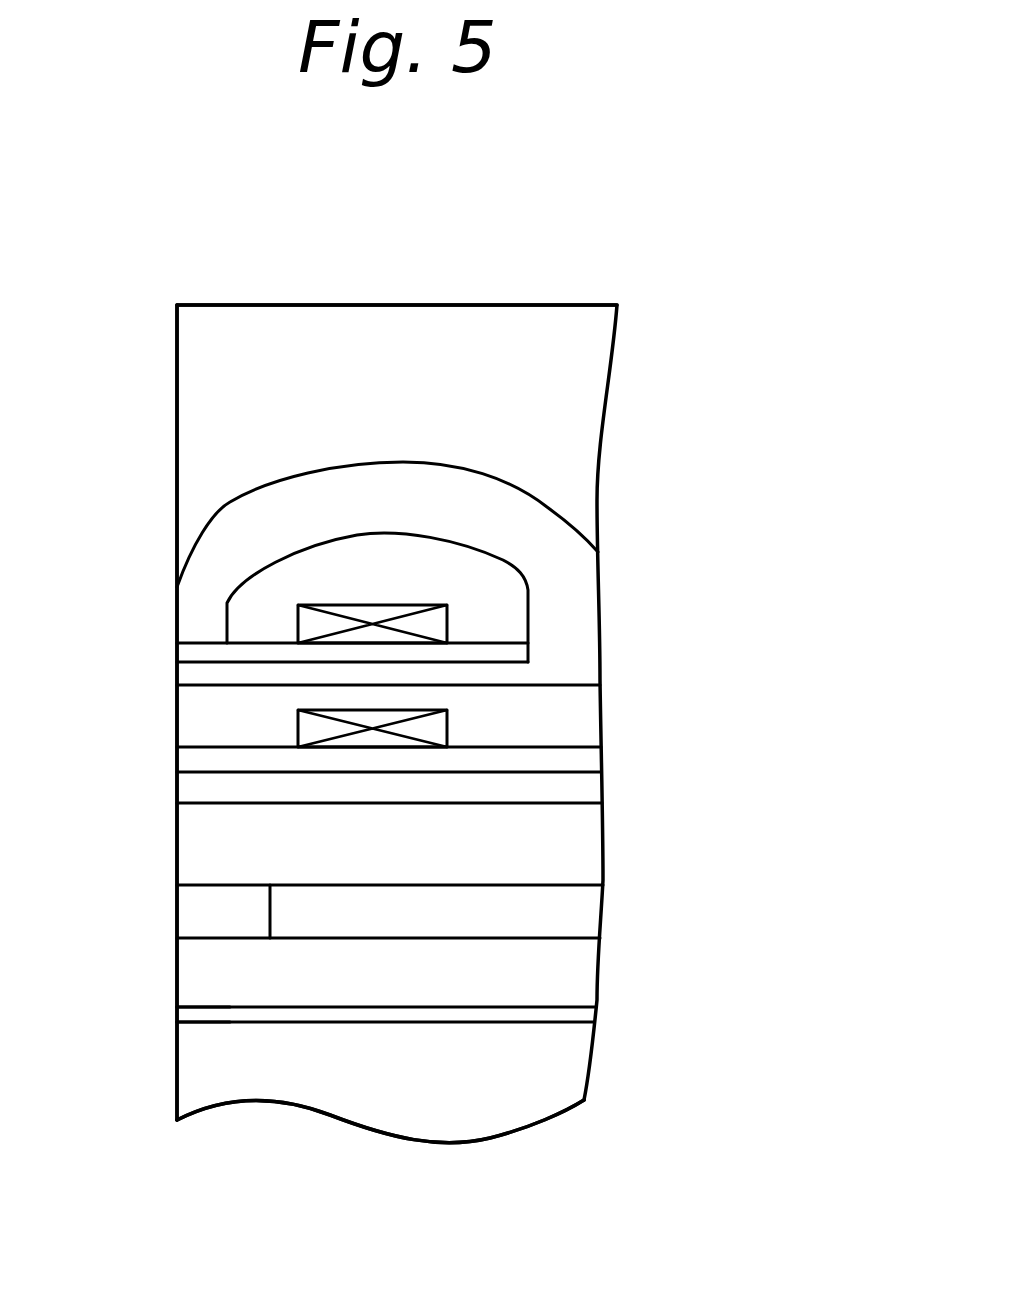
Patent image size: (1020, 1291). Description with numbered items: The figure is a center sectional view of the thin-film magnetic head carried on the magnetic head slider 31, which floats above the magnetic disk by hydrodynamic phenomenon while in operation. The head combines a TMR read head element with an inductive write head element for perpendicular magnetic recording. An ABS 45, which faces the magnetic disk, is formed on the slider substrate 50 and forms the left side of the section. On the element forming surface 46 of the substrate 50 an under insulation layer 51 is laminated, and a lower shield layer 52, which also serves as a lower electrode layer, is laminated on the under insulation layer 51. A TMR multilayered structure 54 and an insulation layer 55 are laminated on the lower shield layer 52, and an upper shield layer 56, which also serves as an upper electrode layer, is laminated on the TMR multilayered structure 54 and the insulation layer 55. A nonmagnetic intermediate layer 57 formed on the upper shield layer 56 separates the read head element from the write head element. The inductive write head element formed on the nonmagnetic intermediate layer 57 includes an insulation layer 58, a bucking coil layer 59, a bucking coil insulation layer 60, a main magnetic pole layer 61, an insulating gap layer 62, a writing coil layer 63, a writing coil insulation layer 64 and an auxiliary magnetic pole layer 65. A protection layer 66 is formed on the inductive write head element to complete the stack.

The magnetic head slider 31 is at (740, 250).
The ABS 45 is at (175, 358).
The element forming surface 46 is at (209, 1025).
The slider substrate 50 is at (567, 1069).
The under insulation layer 51 is at (567, 1013).
The lower shield layer 52 is at (567, 968).
The TMR multilayered structure 54 is at (213, 915).
The insulation layer 55 is at (567, 905).
The upper shield layer 56 is at (567, 839).
The nonmagnetic intermediate layer 57 is at (567, 787).
The insulation layer 58 is at (567, 764).
The bucking coil layer 59 is at (313, 728).
The bucking coil insulation layer 60 is at (567, 714).
The main magnetic pole layer 61 is at (196, 673).
The insulating gap layer 62 is at (196, 656).
The writing coil layer 63 is at (430, 623).
The writing coil insulation layer 64 is at (387, 568).
The auxiliary magnetic pole layer 65 is at (307, 502).
The protection layer 66 is at (540, 333).